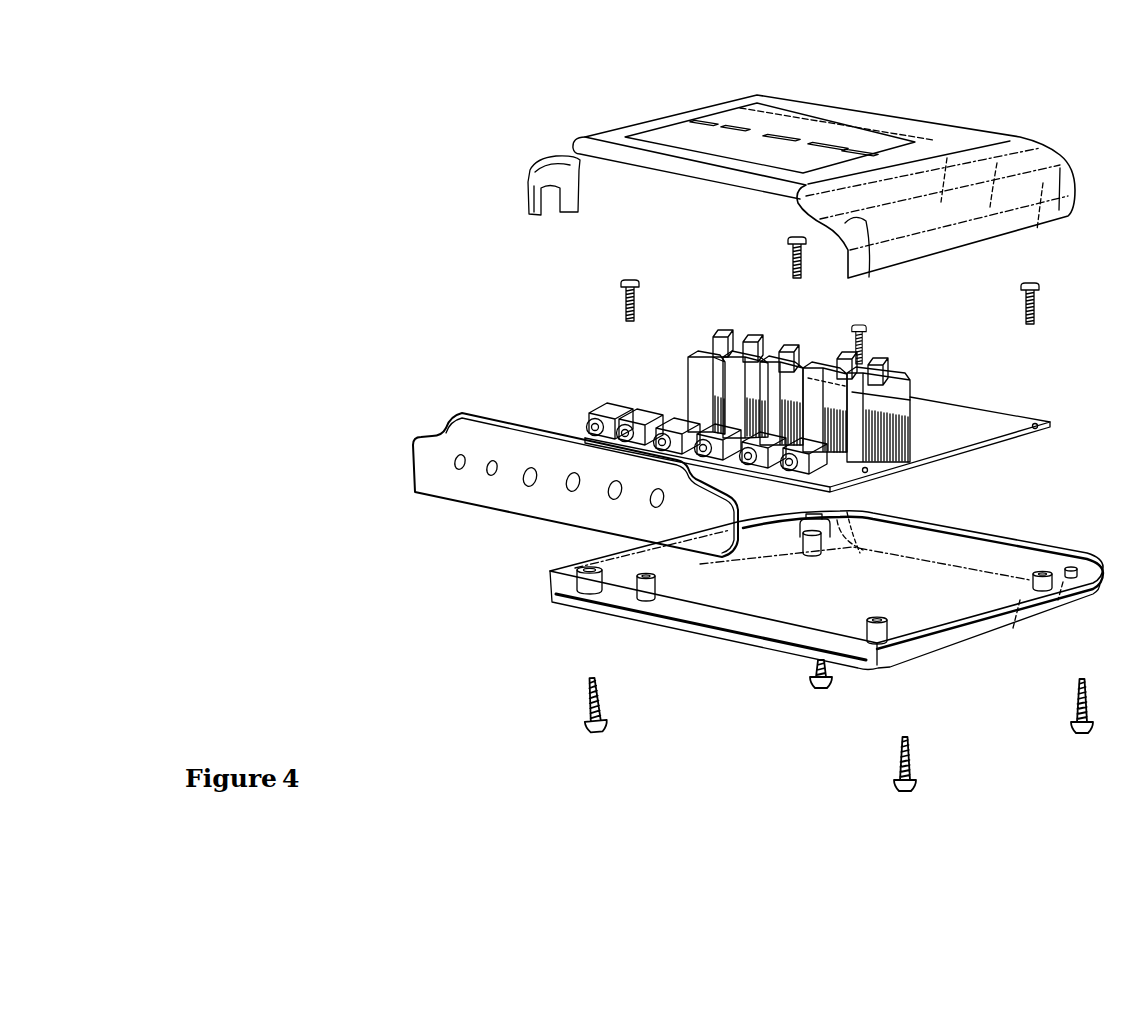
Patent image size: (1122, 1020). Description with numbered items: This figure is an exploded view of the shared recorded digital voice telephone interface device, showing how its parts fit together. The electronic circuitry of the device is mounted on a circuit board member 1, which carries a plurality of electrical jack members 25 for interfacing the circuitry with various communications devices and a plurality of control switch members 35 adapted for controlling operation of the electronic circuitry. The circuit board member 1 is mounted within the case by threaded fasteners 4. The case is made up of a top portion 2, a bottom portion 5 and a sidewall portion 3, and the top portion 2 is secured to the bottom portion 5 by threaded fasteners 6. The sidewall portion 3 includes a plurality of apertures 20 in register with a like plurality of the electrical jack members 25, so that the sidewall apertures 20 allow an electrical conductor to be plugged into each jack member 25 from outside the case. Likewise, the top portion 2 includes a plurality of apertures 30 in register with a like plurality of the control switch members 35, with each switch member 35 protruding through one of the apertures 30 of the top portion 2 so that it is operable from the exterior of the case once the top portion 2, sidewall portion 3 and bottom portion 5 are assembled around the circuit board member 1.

The circuit board member 1 is at (970, 403).
The top portion 2 is at (623, 128).
The sidewall portion 3 is at (440, 437).
The threaded fasteners 4 is at (620, 282).
The bottom portion 5 is at (935, 629).
The threaded fasteners 6 is at (588, 684).
The apertures 20 is at (458, 472).
The electrical jack members 25 is at (598, 422).
The apertures 30 is at (873, 150).
The control switch members 35 is at (883, 362).